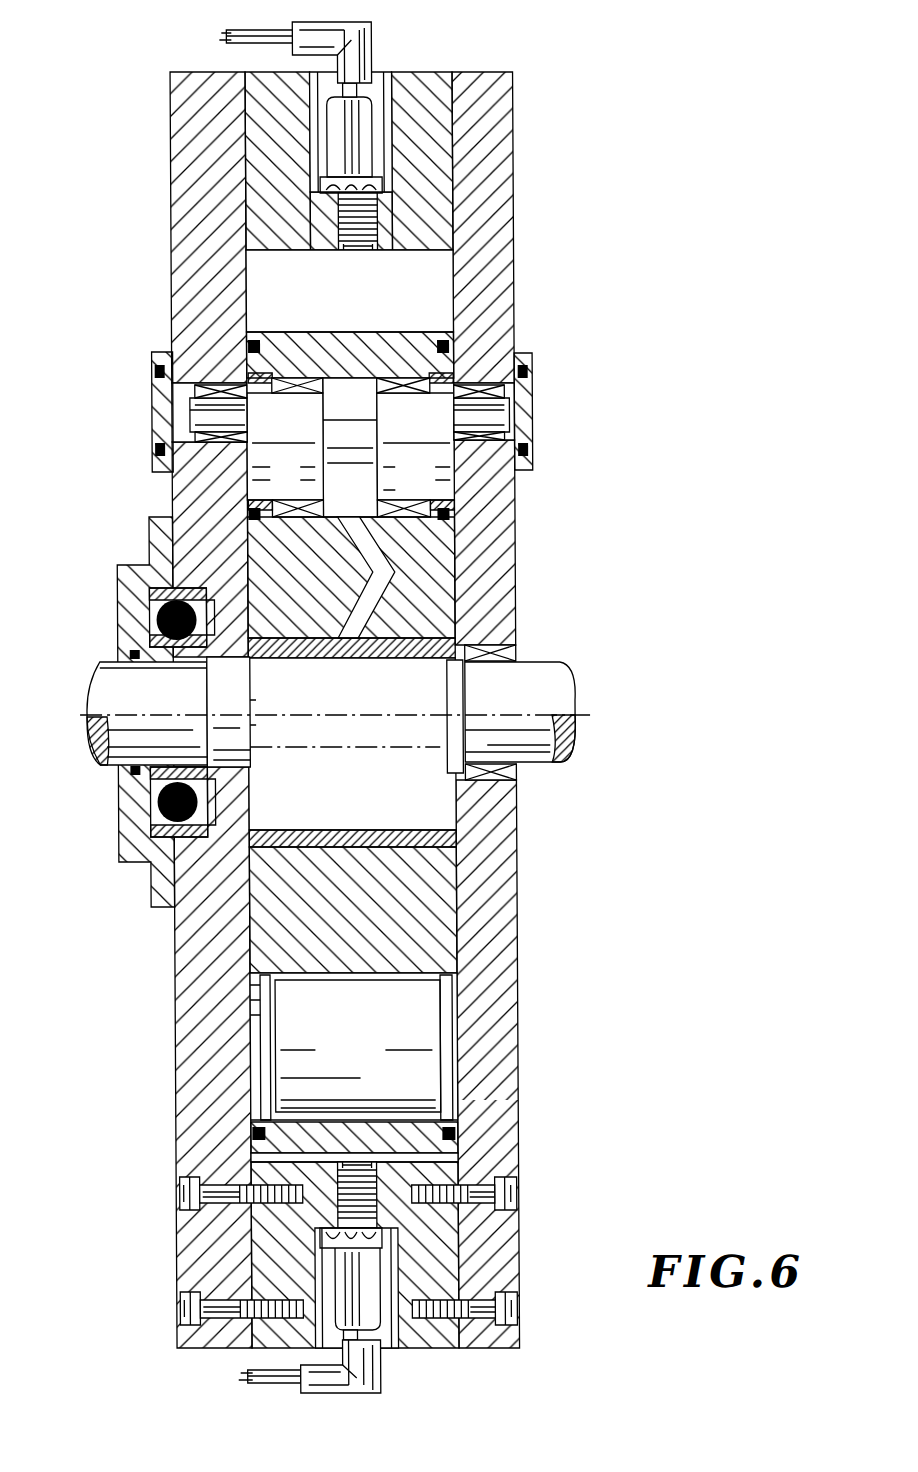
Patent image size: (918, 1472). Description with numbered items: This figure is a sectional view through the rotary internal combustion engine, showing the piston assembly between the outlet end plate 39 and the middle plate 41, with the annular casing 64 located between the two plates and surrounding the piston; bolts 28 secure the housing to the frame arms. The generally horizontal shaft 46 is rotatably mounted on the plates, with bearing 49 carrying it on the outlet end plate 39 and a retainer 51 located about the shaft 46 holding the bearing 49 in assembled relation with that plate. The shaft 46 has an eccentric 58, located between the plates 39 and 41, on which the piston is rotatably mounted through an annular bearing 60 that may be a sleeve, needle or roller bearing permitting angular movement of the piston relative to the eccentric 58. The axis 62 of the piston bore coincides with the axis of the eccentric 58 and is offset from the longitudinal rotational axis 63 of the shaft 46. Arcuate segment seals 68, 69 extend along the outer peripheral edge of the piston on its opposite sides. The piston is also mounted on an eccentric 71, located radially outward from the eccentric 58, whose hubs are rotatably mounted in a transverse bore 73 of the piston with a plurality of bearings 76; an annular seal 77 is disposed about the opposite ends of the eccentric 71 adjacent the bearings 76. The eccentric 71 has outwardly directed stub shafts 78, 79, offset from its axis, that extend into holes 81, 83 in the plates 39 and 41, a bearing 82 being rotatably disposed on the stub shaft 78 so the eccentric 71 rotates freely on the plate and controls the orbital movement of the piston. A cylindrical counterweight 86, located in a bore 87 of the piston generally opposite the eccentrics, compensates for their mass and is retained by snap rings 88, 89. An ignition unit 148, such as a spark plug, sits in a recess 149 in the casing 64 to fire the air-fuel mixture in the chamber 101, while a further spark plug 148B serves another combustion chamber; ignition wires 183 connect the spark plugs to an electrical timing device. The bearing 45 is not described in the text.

The bolts 28 is at (192, 1308).
The outlet end plate 39 is at (185, 992).
The middle plate 41 is at (500, 1025).
The shaft bearing 45 is at (512, 652).
The shaft 46 is at (95, 745).
The bearing 49 is at (157, 803).
The retainer 51 is at (132, 598).
The eccentric 58 is at (395, 817).
The annular bearing 60 is at (287, 833).
The axis 62 is at (412, 740).
The longitudinal rotational axis 63 is at (575, 715).
The casing 64 is at (430, 1257).
The arcuate segment seal 68 is at (253, 1133).
The arcuate segment seal 69 is at (456, 1132).
The eccentric 71 is at (292, 488).
The transverse bore 73 is at (354, 385).
The bearings 76 is at (410, 497).
The annular seal 77 is at (252, 375).
The stub shaft 78 is at (198, 423).
The stub shaft 79 is at (496, 410).
The hole 81 is at (188, 437).
The bearing 82 is at (208, 385).
The hole 83 is at (478, 443).
The cylindrical counterweight 86 is at (366, 1063).
The bore 87 is at (390, 968).
The snap ring 88 is at (304, 1030).
The snap ring 89 is at (435, 1078).
The chamber 101 is at (370, 305).
The ignition unit 148 is at (388, 43).
The spark plug 148B is at (381, 1340).
The recess 149 is at (383, 88).
The ignition wires 183 is at (248, 30).